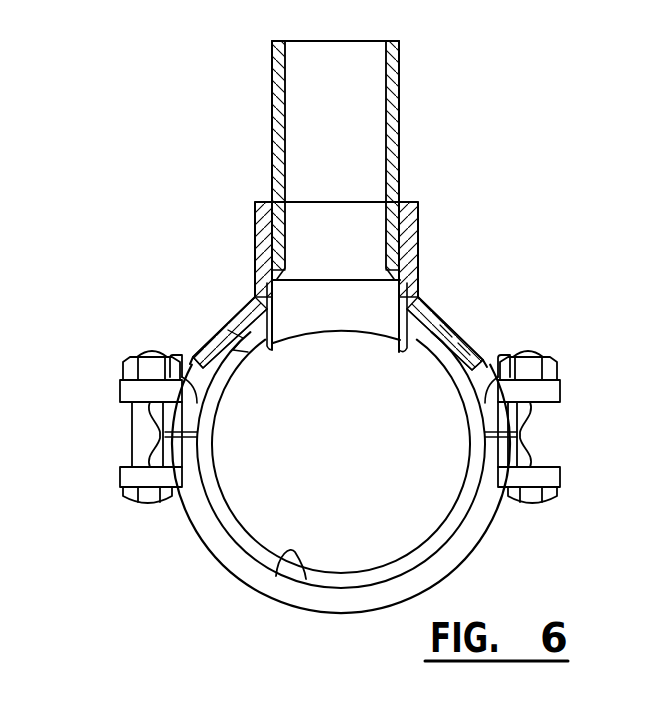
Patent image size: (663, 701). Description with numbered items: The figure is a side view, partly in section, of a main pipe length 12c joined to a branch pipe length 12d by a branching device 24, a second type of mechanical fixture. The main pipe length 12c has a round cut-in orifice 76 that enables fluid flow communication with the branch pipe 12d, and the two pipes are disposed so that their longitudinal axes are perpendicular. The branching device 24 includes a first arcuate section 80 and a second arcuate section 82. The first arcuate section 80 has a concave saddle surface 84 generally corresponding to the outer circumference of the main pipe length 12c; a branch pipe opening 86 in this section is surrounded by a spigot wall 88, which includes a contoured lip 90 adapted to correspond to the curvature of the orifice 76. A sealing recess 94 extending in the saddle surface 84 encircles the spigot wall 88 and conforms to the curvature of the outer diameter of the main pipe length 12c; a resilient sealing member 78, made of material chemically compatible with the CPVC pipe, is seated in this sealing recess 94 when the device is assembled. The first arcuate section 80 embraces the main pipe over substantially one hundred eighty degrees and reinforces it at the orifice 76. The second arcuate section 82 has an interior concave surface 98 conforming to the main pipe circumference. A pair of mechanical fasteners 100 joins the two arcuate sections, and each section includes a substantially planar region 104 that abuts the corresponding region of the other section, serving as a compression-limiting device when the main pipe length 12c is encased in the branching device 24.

The branch pipe length 12d is at (400, 74).
The main pipe length 12c is at (256, 522).
The branching device 24 is at (487, 530).
The cut-in orifice 76 is at (405, 318).
The resilient sealing member 78 is at (250, 310).
The first arcuate section 80 is at (482, 352).
The second arcuate section 82 is at (393, 595).
The concave saddle surface 84 is at (197, 355).
The branch pipe opening 86 is at (343, 316).
The spigot wall 88 is at (210, 380).
The contoured lip 90 is at (289, 332).
The sealing recess 94 is at (445, 318).
The interior concave surface 98 is at (280, 556).
The mechanical fasteners 100 is at (132, 437).
The planar region 104 is at (186, 418).